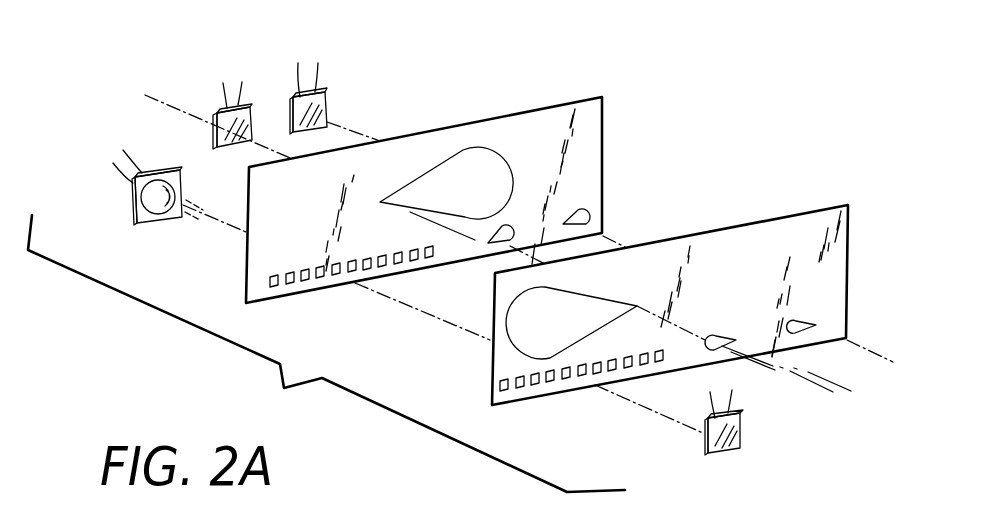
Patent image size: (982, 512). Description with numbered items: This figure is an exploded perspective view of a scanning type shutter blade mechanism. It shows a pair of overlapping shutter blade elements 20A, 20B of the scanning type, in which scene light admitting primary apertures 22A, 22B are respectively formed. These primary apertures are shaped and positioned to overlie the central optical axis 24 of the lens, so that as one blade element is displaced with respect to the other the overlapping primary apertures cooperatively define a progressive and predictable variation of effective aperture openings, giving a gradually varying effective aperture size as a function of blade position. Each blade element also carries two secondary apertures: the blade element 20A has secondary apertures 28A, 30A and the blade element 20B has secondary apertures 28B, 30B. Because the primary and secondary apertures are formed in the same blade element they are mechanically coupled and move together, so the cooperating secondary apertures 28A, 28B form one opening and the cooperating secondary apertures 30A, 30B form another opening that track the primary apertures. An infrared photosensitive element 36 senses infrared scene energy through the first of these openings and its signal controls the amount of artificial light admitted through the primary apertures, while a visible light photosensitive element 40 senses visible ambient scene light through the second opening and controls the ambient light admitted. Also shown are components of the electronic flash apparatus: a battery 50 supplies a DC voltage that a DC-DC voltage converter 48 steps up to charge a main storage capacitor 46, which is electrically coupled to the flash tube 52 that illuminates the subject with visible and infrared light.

The shutter blade element 20A is at (743, 223).
The shutter blade element 20B is at (553, 105).
The primary aperture 22A is at (530, 340).
The primary aperture 22B is at (460, 173).
The central optical axis 24 is at (143, 80).
The secondary aperture 28A is at (728, 337).
The secondary aperture 28B is at (503, 250).
The secondary aperture 30A is at (800, 320).
The secondary aperture 30B is at (587, 218).
The infrared photosensitive element 36 is at (213, 110).
The visible light photosensitive element 40 is at (330, 103).
The main storage capacitor 46 is at (163, 223).
The DC-DC voltage converter 48 is at (745, 427).
The battery 50 is at (523, 390).
The flash tube 52 is at (293, 292).